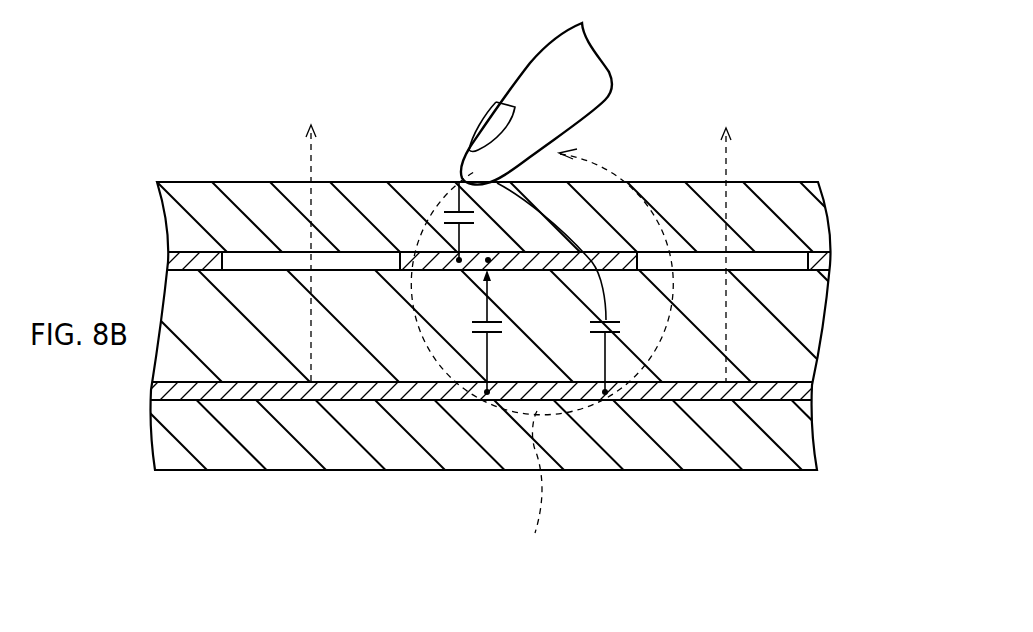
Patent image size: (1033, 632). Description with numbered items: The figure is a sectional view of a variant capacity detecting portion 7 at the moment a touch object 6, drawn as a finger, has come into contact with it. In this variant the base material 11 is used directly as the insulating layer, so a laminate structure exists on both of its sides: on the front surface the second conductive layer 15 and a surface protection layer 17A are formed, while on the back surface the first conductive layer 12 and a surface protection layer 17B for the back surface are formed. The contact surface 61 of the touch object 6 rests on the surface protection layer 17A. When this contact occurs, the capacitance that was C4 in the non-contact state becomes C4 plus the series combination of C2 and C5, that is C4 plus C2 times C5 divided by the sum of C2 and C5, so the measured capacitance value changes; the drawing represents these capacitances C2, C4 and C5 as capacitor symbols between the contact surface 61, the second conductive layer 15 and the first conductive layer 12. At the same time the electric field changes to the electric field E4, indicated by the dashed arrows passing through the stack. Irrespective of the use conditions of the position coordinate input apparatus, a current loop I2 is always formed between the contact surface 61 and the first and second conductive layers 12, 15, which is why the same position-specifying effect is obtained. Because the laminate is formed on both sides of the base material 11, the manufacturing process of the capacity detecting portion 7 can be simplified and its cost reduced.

The capacity detecting portion 7 is at (806, 146).
The touch object 6 is at (632, 123).
The contact surface 61 is at (462, 183).
The surface protection layer 17A is at (807, 218).
The second conductive layer 15 is at (827, 258).
The base material 11 is at (807, 327).
The first conductive layer 12 is at (802, 390).
The surface protection layer for the back surface 17B is at (790, 427).
The electric field E4 is at (311, 153).
The capacitance C2 is at (459, 262).
The capacitance C4 is at (483, 333).
The capacitance C5 is at (600, 333).
The current loop I2 is at (534, 491).